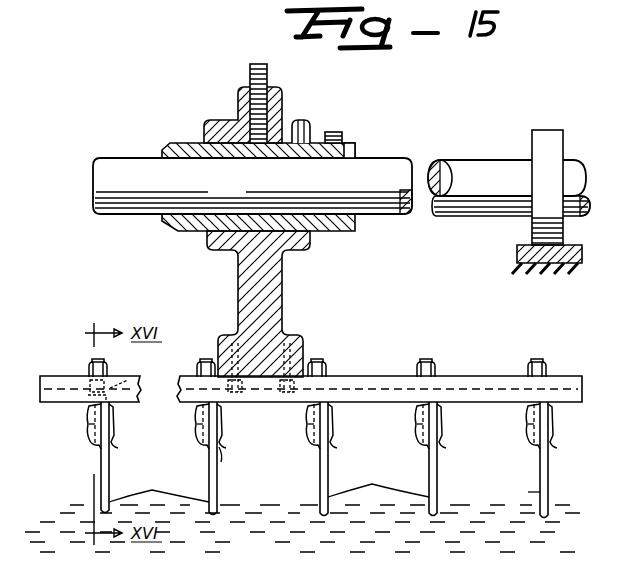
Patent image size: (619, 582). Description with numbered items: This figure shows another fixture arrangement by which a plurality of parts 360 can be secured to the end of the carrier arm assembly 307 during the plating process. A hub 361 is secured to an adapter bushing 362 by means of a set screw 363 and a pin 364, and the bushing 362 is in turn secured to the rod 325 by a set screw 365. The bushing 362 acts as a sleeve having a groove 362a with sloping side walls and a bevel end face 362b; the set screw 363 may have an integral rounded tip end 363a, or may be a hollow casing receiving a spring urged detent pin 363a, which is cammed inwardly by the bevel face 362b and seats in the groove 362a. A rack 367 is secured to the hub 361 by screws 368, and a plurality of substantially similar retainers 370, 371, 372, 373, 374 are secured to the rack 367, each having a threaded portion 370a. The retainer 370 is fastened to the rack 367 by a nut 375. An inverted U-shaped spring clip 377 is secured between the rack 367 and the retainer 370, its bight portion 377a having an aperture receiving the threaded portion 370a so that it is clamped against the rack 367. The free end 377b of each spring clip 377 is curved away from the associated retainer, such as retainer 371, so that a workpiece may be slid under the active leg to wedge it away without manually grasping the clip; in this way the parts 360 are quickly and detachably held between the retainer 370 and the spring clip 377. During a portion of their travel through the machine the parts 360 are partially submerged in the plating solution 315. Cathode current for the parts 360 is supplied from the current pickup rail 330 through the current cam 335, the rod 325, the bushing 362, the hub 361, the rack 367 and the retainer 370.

The rod 325 is at (93, 178).
The carrier arm assembly 307 is at (388, 158).
The current cam 335 is at (540, 130).
The current pickup rail 330 is at (517, 256).
The hub 361 is at (274, 279).
The adapter bushing 362 is at (356, 227).
The groove 362a is at (205, 233).
The bevel end face 362b is at (170, 143).
The set screw 363 is at (258, 64).
The rounded tip end 363a is at (255, 142).
The pin 364 is at (302, 124).
The set screw 365 is at (340, 133).
The rack 367 is at (362, 384).
The screws 368 is at (236, 398).
The retainer 370 is at (92, 444).
The threaded portion 370a is at (88, 366).
The retainer 371 is at (198, 440).
The retainer 372 is at (317, 446).
The retainer 373 is at (422, 441).
The retainer 374 is at (535, 444).
The nut 375 is at (107, 371).
The inverted U-shaped spring clip 377 is at (114, 408).
The bight portion 377a is at (140, 383).
The free end 377b is at (222, 450).
The parts 360 is at (324, 484).
The plating solution 315 is at (288, 557).